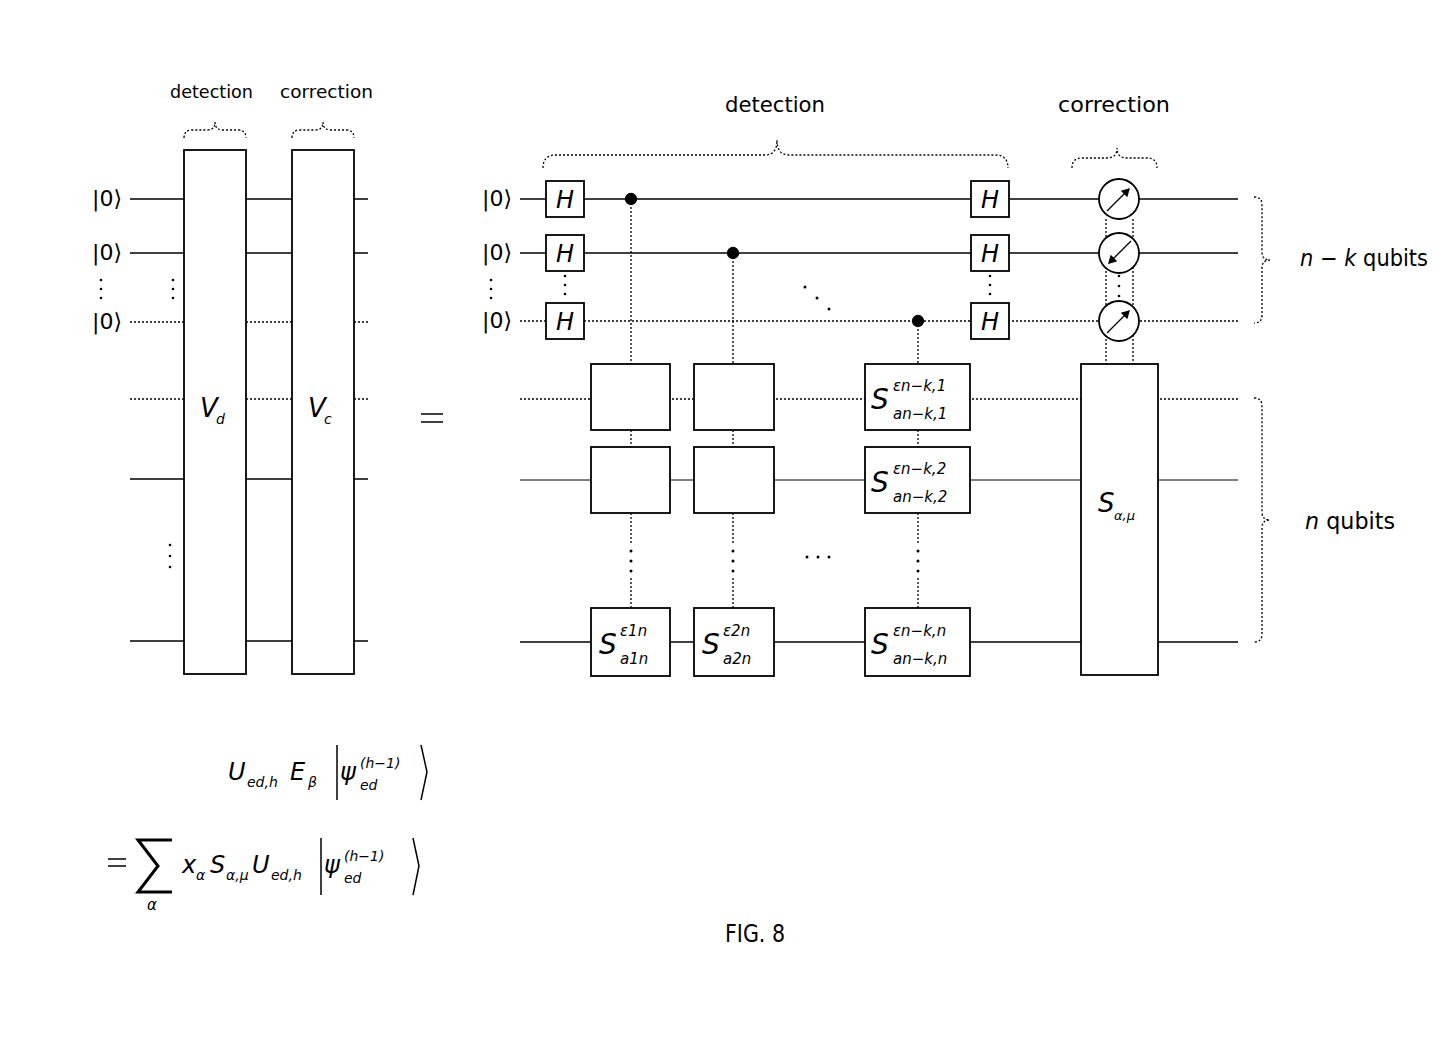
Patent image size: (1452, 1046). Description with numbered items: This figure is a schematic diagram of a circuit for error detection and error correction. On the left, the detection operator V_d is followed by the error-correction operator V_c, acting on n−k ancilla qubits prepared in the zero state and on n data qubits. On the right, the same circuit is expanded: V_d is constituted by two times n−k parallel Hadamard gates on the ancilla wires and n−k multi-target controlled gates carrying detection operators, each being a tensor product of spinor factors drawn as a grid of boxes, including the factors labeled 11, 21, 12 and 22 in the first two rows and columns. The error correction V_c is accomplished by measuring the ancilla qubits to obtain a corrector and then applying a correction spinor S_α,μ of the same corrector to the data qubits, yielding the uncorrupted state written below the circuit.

The stabilizer gate S_a11 11 is at (630, 397).
The stabilizer gate S_a21 21 is at (734, 397).
The stabilizer gate S_a12 12 is at (630, 480).
The stabilizer gate S_a22 22 is at (734, 480).